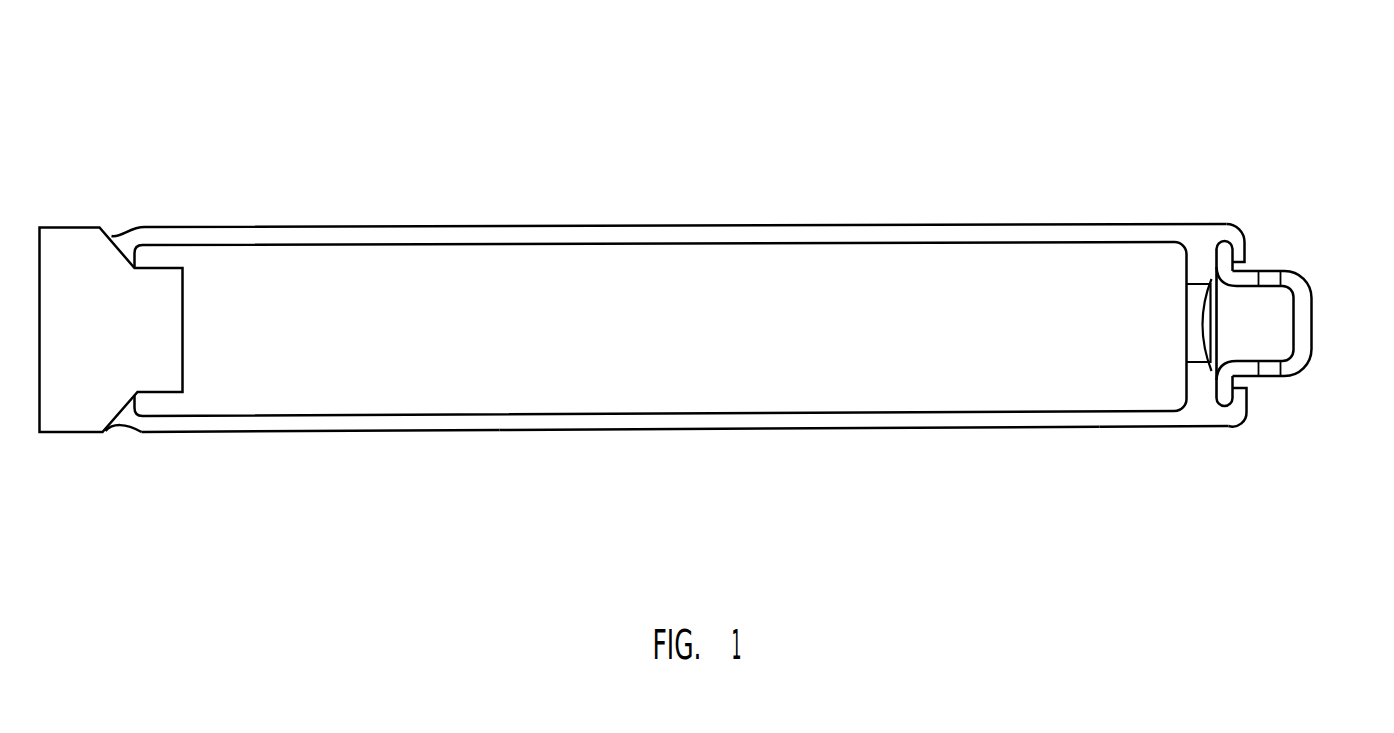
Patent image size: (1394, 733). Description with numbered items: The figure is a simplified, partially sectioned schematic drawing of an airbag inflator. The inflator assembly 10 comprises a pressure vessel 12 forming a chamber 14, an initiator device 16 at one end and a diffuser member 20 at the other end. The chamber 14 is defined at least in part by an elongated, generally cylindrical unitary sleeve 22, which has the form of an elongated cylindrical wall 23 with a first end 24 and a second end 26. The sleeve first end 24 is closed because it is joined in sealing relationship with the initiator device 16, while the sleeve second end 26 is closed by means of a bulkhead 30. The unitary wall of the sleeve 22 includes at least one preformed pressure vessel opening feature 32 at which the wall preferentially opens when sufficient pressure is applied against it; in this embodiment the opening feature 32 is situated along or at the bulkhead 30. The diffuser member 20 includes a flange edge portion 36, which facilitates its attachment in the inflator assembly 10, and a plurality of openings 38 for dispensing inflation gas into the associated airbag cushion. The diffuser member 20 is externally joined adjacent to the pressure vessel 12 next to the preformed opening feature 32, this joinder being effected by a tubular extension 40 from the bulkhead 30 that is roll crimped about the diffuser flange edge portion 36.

The inflator assembly 10 is at (807, 165).
The pressure vessel 12 is at (477, 227).
The chamber 14 is at (792, 382).
The initiator device 16 is at (80, 257).
The diffuser member 20 is at (1315, 315).
The unitary sleeve 22 is at (352, 435).
The elongated cylindrical wall 23 is at (588, 432).
The sleeve first end 24 is at (122, 447).
The sleeve second end 26 is at (1195, 462).
The bulkhead 30 is at (1203, 277).
The preformed pressure vessel opening feature 32 is at (1200, 245).
The flange edge portion 36 is at (1227, 407).
The openings 38 is at (1268, 378).
The tubular extension 40 is at (1240, 408).